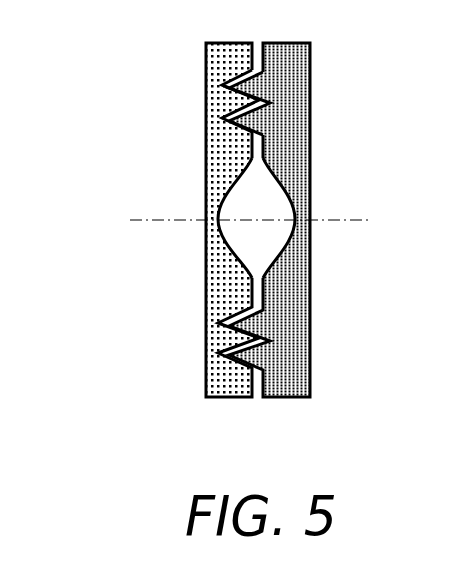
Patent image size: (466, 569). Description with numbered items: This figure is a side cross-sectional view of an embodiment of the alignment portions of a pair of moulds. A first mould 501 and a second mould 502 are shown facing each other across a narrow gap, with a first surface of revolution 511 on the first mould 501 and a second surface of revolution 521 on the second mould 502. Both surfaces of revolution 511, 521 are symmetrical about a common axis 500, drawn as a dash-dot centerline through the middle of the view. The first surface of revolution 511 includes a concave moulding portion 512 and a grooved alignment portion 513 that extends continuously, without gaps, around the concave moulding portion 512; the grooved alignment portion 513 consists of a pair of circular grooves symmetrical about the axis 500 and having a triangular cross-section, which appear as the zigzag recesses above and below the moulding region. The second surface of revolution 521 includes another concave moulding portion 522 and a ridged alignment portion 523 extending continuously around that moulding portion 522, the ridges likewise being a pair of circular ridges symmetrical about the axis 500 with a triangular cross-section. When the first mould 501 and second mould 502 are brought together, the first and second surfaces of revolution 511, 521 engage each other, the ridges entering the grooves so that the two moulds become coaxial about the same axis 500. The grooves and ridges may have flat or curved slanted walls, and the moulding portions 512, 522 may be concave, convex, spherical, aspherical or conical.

The axis 500 is at (165, 224).
The first mould 501 is at (197, 346).
The second mould 502 is at (360, 354).
The first surface of revolution 511 is at (168, 125).
The concave moulding portion 512 is at (220, 192).
The grooved alignment portion 513 is at (229, 67).
The second surface of revolution 521 is at (329, 256).
The concave moulding portion 522 is at (293, 183).
The ridged alignment portion 523 is at (266, 88).